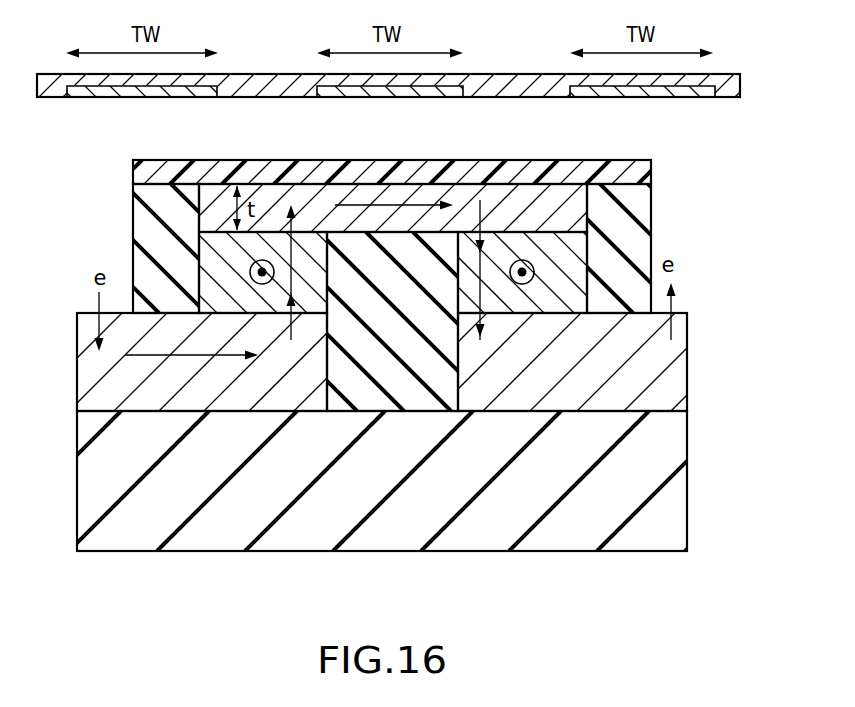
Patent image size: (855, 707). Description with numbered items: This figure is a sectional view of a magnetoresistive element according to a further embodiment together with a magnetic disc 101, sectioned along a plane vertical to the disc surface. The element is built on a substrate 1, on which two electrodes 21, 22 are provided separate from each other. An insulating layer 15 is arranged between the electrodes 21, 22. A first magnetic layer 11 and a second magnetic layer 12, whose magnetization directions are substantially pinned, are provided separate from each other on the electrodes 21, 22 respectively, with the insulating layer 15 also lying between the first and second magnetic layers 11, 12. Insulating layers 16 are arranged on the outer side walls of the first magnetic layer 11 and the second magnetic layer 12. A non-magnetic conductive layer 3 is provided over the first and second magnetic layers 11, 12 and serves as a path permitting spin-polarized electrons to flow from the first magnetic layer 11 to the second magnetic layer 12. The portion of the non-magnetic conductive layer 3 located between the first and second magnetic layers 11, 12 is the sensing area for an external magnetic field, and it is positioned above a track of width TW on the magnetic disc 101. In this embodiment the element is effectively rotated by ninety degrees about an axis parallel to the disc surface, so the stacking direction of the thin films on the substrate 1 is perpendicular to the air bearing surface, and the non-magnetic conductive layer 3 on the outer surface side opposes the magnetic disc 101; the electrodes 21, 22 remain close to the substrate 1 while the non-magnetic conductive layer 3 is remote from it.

The substrate 1 is at (690, 475).
The non-magnetic conductive layer 3 is at (538, 200).
The first magnetic layer 11 is at (213, 240).
The second magnetic layer 12 is at (580, 250).
The insulating layer 15 is at (340, 242).
The insulating layers 16 is at (133, 220).
The electrode 21 is at (77, 364).
The electrode 22 is at (690, 377).
The magnetic disc 101 is at (727, 97).